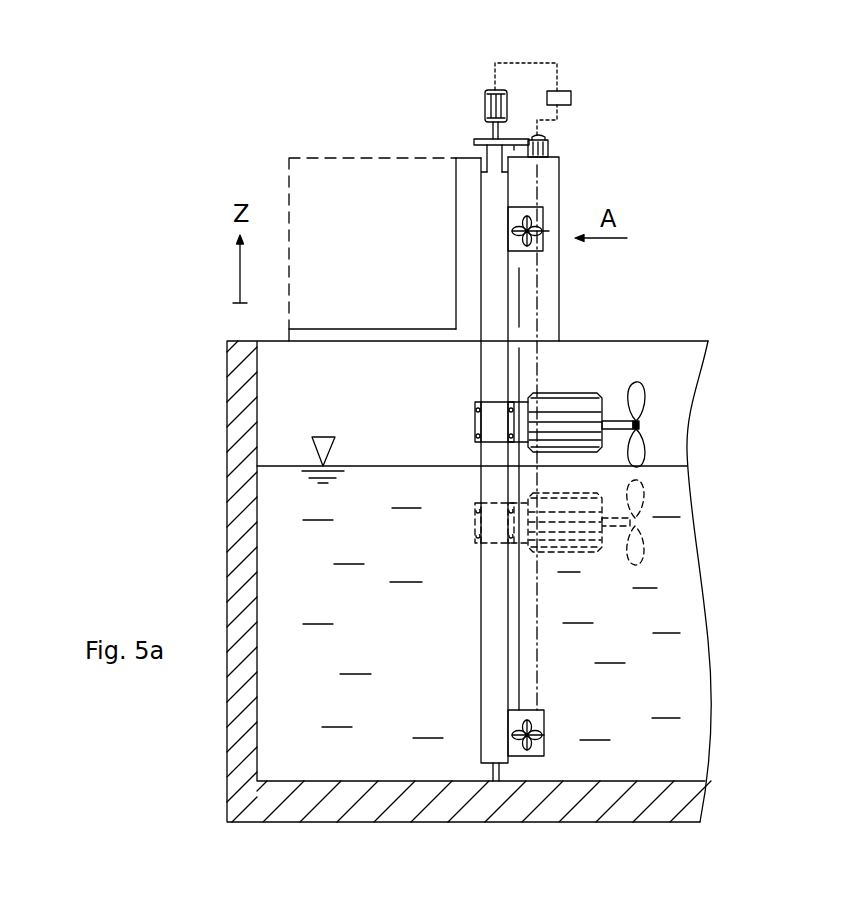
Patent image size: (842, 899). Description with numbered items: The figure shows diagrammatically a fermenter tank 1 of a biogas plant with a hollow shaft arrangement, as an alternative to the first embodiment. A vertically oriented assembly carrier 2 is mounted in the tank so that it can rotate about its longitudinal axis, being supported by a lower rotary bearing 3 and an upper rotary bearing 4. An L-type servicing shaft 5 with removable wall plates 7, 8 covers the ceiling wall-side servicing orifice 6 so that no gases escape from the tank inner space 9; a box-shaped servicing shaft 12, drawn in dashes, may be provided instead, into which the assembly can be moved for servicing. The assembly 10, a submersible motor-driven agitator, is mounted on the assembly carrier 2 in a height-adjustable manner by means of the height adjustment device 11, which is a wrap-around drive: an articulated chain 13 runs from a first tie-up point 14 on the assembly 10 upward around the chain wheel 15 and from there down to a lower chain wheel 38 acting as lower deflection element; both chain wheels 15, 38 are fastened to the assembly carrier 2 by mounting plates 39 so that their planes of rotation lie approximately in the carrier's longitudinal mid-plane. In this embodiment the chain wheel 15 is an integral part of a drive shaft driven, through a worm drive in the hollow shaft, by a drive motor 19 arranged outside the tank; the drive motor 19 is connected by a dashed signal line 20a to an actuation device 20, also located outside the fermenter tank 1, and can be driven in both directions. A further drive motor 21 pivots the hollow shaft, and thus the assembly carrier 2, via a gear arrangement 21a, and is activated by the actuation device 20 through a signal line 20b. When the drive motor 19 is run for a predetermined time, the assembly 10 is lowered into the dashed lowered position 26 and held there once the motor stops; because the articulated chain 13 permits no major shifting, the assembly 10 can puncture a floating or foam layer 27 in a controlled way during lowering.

The fermenter tank 1 is at (614, 413).
The assembly carrier 2 is at (492, 638).
The lower rotary bearing 3 is at (456, 157).
The upper rotary bearing 4 is at (502, 768).
The L-type servicing shaft 5 is at (385, 249).
The servicing orifice 6 is at (389, 352).
The wall plate 7 is at (345, 329).
The wall plate 8 is at (456, 265).
The tank inner space 9 is at (313, 404).
The assembly 10 is at (644, 364).
The height adjustment device 11 is at (553, 230).
The box-shaped servicing shaft 12 is at (332, 157).
The articulated chain 13 is at (540, 293).
The first tie-up point 14 is at (537, 391).
The chain wheel 15 is at (527, 246).
The drive motor 19 is at (484, 102).
The actuation device 20 is at (565, 100).
The signal line 20a is at (523, 63).
The signal line 20b is at (553, 113).
The further drive motor 21 is at (550, 143).
The gear arrangement 21a is at (514, 152).
The lowered position 26 is at (577, 547).
The floating or foam layer 27 is at (672, 465).
The lower chain wheel 38 is at (542, 735).
The mounting plate 39 is at (556, 533).